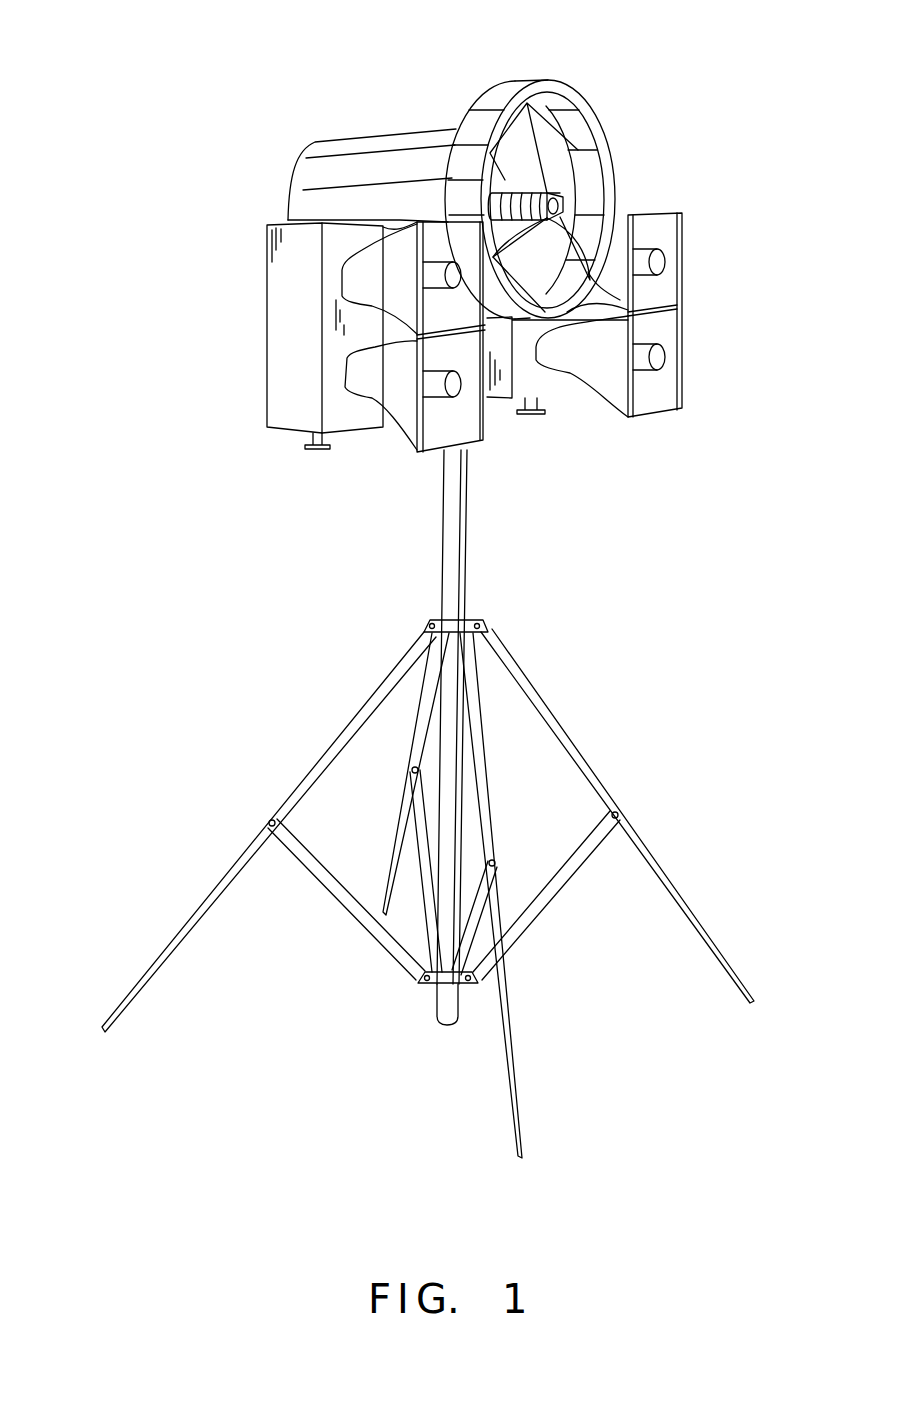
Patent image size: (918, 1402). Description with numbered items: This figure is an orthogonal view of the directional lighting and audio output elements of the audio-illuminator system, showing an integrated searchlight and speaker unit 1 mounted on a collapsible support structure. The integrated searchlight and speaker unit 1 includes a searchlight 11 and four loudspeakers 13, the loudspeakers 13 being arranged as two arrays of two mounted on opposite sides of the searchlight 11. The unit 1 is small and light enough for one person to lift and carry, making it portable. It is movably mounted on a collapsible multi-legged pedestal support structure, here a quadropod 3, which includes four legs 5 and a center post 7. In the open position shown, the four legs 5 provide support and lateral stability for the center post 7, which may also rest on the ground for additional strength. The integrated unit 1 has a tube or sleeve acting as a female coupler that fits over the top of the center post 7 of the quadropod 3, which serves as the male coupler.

The integrated searchlight and speaker unit 1 is at (473, 226).
The quadropod 3 is at (405, 804).
The legs 5 is at (513, 1066).
The center post 7 is at (445, 928).
The searchlight 11 is at (484, 86).
The loudspeakers 13 is at (297, 293).